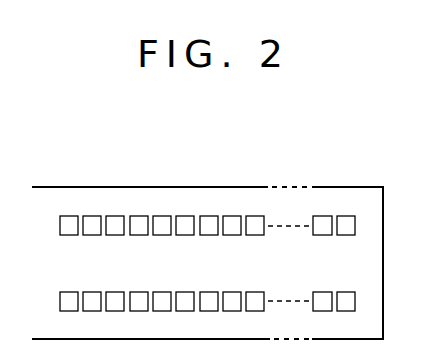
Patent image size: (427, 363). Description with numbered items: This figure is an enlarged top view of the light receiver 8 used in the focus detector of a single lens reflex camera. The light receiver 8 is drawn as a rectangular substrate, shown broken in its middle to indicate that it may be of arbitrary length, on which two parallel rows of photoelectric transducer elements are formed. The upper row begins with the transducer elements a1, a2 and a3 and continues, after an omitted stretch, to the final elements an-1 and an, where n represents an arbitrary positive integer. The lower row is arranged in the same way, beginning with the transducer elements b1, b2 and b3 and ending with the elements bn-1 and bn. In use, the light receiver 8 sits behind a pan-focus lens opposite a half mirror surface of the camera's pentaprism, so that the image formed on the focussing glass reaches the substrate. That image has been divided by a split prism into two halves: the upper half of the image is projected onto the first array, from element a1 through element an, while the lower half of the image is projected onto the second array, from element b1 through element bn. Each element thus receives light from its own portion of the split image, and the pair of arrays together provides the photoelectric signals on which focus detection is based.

The light receiver 8 is at (345, 187).
The photoelectric transducer element a1 is at (70, 222).
The photoelectric transducer element a2 is at (93, 222).
The photoelectric transducer element a3 is at (116, 222).
The photoelectric transducer element an-1 is at (325, 222).
The photoelectric transducer element an is at (345, 222).
The photoelectric transducer element b1 is at (69, 298).
The photoelectric transducer element b2 is at (93, 298).
The photoelectric transducer element b3 is at (116, 298).
The photoelectric transducer element bn-1 is at (325, 298).
The photoelectric transducer element bn is at (345, 298).